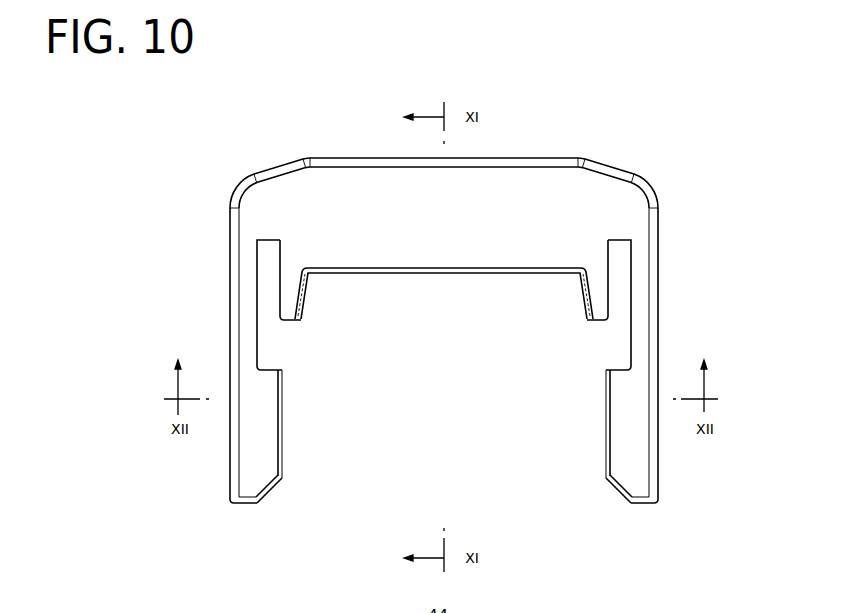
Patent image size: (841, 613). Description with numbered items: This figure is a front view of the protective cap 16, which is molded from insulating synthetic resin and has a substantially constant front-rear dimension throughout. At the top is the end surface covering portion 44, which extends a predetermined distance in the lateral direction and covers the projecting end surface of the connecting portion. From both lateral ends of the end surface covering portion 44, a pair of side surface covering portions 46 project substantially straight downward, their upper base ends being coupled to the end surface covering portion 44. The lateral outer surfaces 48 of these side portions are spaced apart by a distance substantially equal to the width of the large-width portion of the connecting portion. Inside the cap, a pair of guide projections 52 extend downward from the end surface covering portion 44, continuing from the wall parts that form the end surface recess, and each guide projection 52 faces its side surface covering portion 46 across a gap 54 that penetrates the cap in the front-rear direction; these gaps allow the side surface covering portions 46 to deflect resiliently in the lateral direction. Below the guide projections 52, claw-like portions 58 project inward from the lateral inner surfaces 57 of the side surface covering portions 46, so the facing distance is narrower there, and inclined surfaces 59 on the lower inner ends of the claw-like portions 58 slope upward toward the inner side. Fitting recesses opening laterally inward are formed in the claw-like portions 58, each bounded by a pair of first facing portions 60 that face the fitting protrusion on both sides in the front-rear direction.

The protective cap 16 is at (666, 146).
The end surface covering portion 44 is at (493, 190).
The side surface covering portion 46 is at (220, 270).
The lateral outer surface 48 is at (232, 297).
The guide projection 52 is at (290, 295).
The gap 54 is at (281, 256).
The lateral inner surface 57 is at (260, 312).
The claw-like portion 58 is at (290, 402).
The inclined surface 59 is at (272, 494).
The first facing portion 60 is at (270, 428).